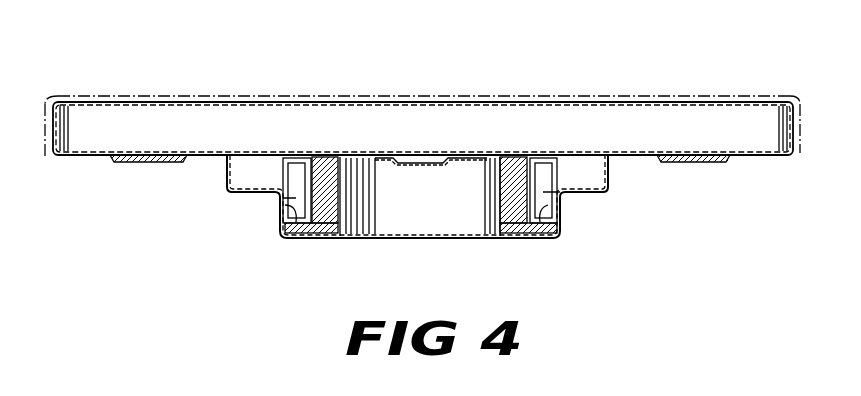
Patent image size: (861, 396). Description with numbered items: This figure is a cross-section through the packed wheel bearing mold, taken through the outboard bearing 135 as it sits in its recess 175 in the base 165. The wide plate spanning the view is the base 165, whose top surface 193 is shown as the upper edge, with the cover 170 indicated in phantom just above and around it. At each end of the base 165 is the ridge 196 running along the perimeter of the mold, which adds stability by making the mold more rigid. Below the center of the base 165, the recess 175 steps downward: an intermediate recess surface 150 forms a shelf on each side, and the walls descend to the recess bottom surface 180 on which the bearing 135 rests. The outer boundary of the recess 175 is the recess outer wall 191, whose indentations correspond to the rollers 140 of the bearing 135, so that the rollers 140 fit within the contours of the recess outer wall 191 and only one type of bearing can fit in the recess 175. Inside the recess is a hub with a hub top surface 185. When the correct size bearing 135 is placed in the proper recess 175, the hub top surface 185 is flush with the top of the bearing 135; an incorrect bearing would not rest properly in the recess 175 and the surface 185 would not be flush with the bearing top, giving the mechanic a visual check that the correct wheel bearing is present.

The base 165 is at (348, 101).
The cover 170 is at (578, 97).
The top surface 193 is at (207, 157).
The ridge 196 is at (130, 105).
The recess 175 is at (273, 163).
The intermediate recess surface 150 is at (252, 190).
The outboard bearing 135 is at (520, 156).
The recess outer wall 191 is at (288, 233).
The rollers 140 is at (284, 205).
The recess bottom surface 180 is at (340, 238).
The hub top surface 185 is at (468, 155).